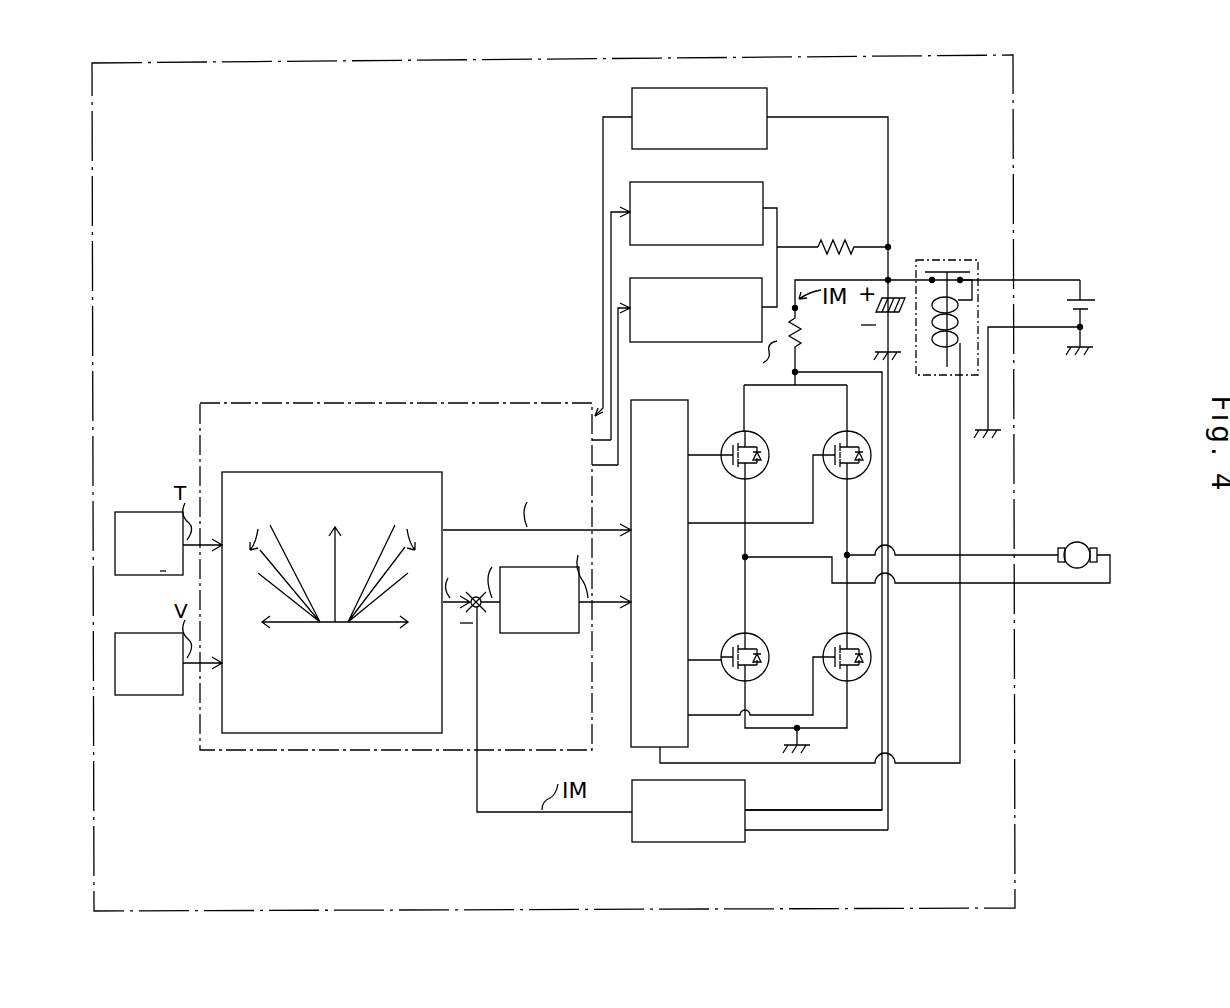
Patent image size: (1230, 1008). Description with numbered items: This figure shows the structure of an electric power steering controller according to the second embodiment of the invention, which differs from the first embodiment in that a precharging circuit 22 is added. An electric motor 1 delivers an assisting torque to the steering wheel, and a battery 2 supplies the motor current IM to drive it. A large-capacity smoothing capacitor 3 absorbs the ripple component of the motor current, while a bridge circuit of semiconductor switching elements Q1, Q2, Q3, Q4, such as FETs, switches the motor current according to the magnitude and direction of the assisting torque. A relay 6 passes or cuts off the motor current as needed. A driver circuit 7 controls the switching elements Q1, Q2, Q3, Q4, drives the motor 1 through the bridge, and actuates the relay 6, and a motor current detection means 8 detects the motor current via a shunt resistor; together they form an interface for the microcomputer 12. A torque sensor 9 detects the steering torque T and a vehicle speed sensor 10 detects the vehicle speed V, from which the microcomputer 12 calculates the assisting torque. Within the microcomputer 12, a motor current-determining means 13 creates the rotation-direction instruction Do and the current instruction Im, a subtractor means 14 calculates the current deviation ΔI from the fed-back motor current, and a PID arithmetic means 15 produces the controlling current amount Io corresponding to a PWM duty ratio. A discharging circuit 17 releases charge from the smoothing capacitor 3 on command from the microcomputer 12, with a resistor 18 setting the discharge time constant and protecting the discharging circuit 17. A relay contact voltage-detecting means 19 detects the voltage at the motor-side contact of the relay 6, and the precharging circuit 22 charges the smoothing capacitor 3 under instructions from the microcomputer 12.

The electric motor 1 is at (1088, 545).
The battery 2 is at (1090, 293).
The capacitor 3 is at (880, 298).
The relay 6 is at (950, 378).
The driver circuit 7 is at (652, 398).
The motor current detection means 8 is at (729, 843).
The torque sensor 9 is at (138, 510).
The vehicle speed sensor 10 is at (140, 697).
The microcomputer 12 is at (473, 399).
The motor current-determining means 13 is at (282, 471).
The subtractor means 14 is at (483, 613).
The PID arithmetic means 15 is at (530, 635).
The discharging circuit 17 is at (683, 273).
The resistor 18 is at (836, 238).
The relay contact voltage-detecting means 19 is at (768, 102).
The precharging circuit 22 is at (768, 196).
The semiconductor switching element Q1 is at (726, 432).
The semiconductor switching element Q2 is at (764, 634).
The semiconductor switching element Q3 is at (829, 432).
The semiconductor switching element Q4 is at (839, 633).